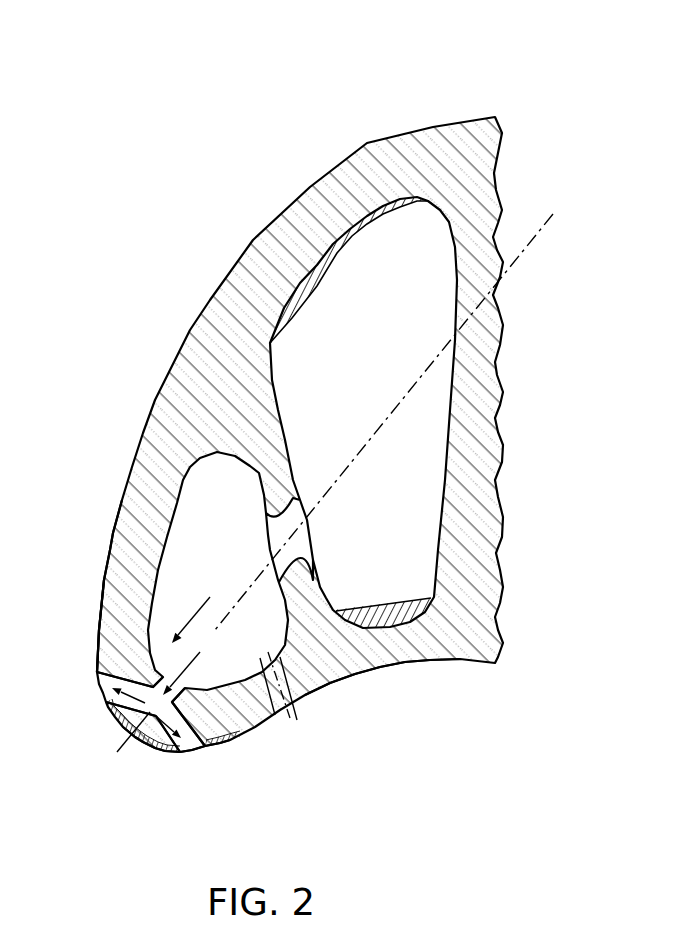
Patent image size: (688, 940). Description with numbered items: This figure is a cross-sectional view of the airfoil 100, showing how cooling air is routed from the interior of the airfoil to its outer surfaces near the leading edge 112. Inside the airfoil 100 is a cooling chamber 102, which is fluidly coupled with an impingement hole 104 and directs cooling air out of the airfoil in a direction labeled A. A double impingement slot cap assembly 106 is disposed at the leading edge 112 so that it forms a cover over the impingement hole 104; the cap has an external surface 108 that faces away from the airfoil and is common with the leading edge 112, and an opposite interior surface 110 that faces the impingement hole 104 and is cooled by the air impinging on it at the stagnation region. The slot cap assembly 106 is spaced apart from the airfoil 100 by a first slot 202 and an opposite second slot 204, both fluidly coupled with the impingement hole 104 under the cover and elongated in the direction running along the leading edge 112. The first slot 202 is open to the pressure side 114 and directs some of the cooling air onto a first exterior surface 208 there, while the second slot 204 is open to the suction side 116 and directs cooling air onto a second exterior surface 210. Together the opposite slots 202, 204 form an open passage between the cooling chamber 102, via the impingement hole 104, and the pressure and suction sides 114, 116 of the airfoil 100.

The airfoil 100 is at (510, 76).
The cooling chamber 102 is at (273, 718).
The impingement hole 104 is at (175, 705).
The double impingement slot cap assembly 106 is at (102, 710).
The external surface 108 is at (122, 737).
The interior surface 110 is at (193, 745).
The leading edge 112 is at (148, 753).
The pressure side 114 is at (377, 668).
The suction side 116 is at (110, 548).
The first slot 202 is at (212, 748).
The second slot 204 is at (96, 683).
The first exterior surface 208 is at (247, 655).
The second exterior surface 210 is at (97, 637).